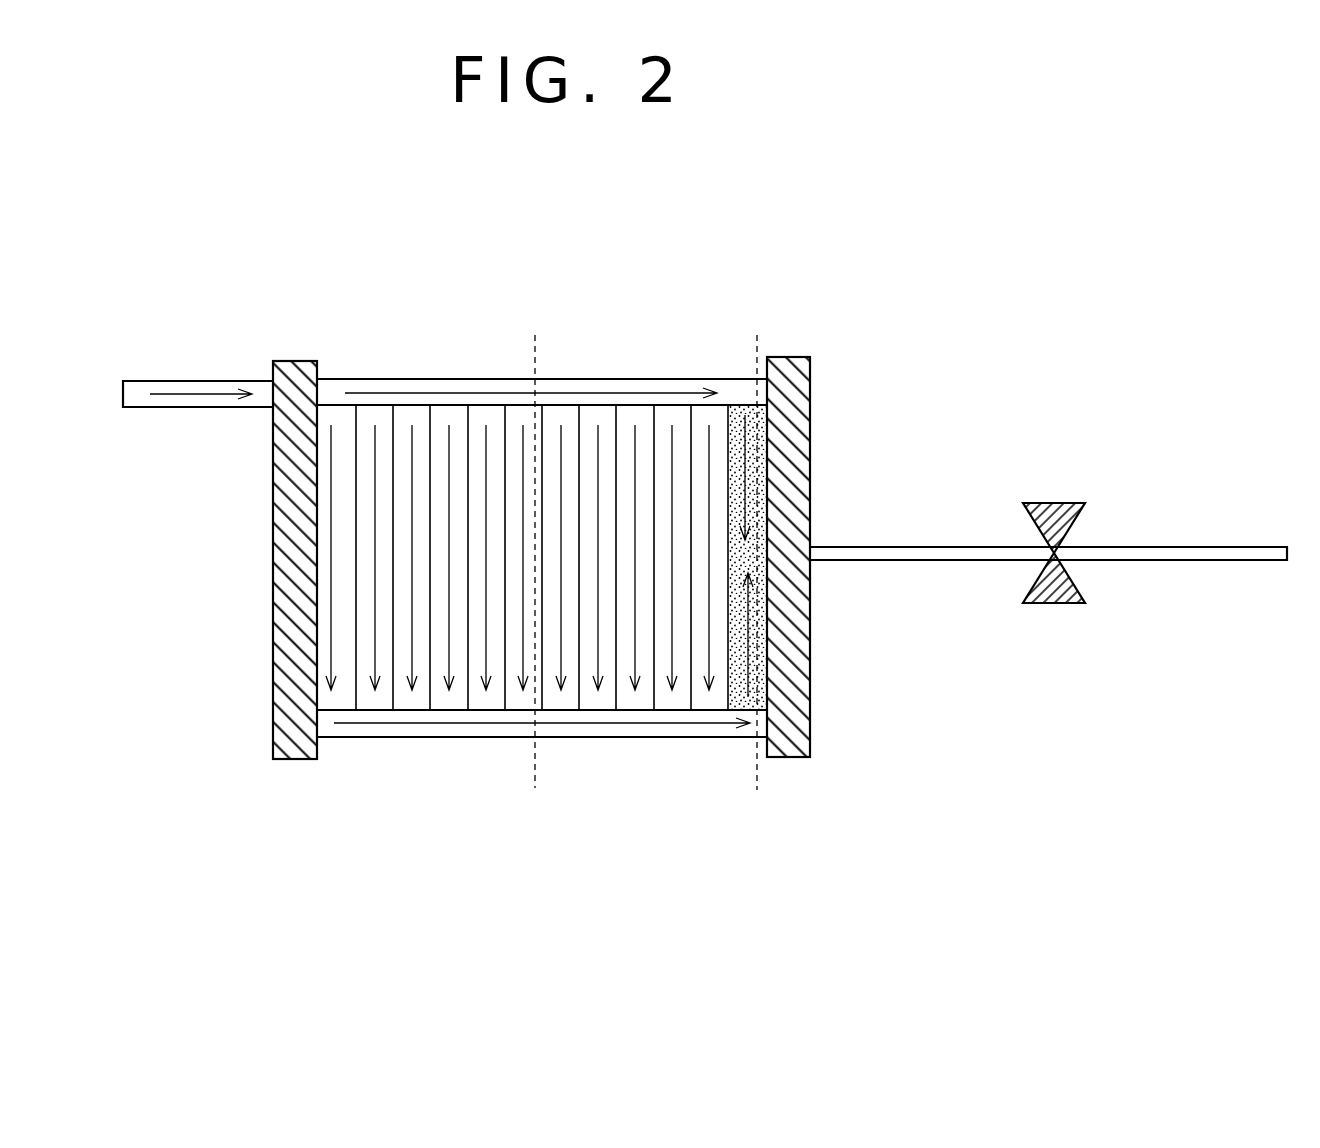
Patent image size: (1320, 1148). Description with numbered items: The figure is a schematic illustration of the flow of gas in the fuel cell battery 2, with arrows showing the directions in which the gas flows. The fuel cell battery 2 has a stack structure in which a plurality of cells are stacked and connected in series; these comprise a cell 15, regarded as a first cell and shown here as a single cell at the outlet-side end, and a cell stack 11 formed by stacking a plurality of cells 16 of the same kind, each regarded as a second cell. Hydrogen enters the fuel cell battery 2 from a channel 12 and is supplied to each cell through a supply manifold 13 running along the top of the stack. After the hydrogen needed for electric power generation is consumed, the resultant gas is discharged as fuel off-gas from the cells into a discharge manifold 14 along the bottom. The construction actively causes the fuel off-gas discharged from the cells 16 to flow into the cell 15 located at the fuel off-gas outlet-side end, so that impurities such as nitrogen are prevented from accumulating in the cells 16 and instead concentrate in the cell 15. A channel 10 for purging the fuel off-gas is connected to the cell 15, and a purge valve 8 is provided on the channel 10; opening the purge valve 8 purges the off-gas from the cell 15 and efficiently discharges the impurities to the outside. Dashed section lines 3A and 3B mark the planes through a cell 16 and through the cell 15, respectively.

The fuel cell battery 2 is at (456, 559).
The purge valve 8 is at (1057, 500).
The channel 10 is at (905, 560).
The cell stack 11 is at (542, 510).
The channel 12 is at (137, 410).
The supply manifold 13 is at (381, 378).
The discharge manifold 14 is at (605, 740).
The cell 15 is at (716, 470).
The cells 16 is at (604, 423).
The section line 3A-3A' 3A is at (541, 560).
The section line 3B-3B' 3B is at (763, 560).